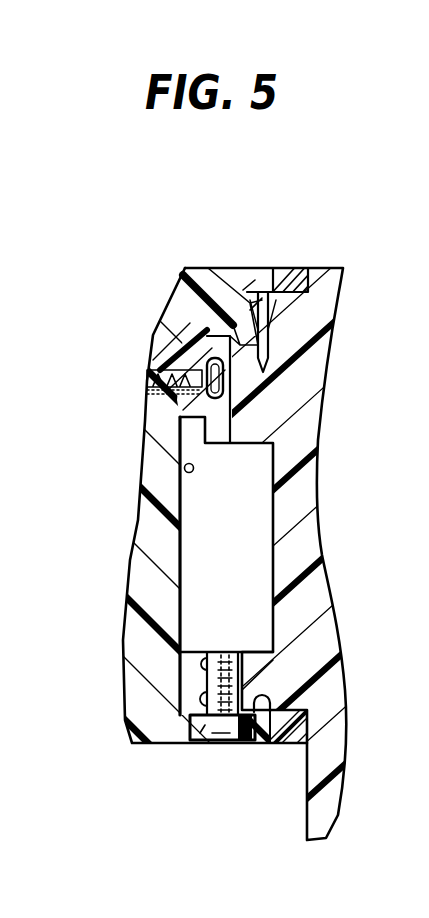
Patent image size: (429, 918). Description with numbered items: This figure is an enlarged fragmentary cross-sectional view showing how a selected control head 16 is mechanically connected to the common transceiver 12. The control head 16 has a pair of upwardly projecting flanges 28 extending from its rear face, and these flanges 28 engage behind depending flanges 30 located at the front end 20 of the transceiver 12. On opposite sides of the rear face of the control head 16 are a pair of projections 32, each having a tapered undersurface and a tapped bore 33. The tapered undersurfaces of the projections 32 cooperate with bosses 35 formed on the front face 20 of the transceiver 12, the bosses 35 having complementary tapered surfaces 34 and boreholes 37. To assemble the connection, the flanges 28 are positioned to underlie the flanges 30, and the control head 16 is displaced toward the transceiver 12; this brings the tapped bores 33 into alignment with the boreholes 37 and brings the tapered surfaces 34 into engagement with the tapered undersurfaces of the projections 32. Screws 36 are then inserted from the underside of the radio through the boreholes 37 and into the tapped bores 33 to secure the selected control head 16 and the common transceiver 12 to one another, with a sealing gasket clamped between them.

The transceiver 12 is at (140, 527).
The control head 16 is at (323, 580).
The front end 20 is at (184, 468).
The upwardly projecting flanges 28 is at (230, 335).
The depending flanges 30 is at (256, 333).
The projections 32 is at (252, 668).
The tapped bore 33 is at (212, 660).
The tapered surfaces 34 is at (270, 747).
The bosses 35 is at (258, 747).
The screws 36 is at (198, 747).
The boreholes 37 is at (200, 700).